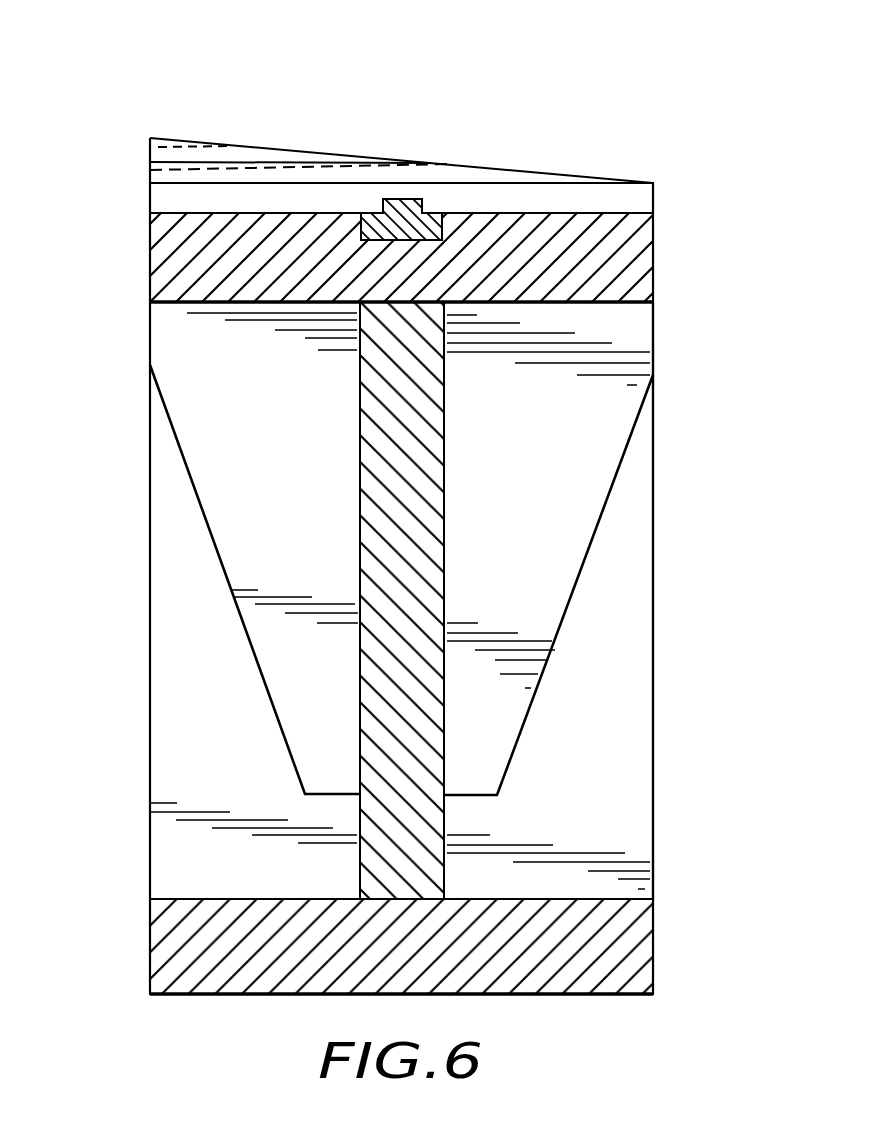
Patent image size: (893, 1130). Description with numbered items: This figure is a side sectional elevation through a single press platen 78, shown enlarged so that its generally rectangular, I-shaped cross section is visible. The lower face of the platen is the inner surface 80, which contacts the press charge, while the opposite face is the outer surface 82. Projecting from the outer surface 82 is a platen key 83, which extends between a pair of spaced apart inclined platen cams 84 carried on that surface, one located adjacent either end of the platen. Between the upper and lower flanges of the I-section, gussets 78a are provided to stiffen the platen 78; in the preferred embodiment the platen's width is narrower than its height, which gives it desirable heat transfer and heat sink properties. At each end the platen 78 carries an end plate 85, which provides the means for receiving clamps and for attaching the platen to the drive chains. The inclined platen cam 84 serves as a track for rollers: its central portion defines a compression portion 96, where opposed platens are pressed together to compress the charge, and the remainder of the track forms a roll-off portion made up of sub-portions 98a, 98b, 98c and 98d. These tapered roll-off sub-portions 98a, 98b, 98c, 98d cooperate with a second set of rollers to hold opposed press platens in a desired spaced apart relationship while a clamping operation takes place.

The press platen 78 is at (424, 594).
The gussets 78a is at (288, 748).
The inner surface 80 is at (610, 994).
The outer surface 82 is at (175, 211).
The platen key 83 is at (412, 198).
The inclined platen cam 84 is at (657, 196).
The end plate 85 is at (655, 814).
The compression portion 96 is at (468, 162).
The roll-off sub-portion 98a is at (497, 182).
The roll-off sub-portion 98b is at (355, 165).
The roll-off sub-portion 98c is at (258, 160).
The roll-off sub-portion 98d is at (178, 146).